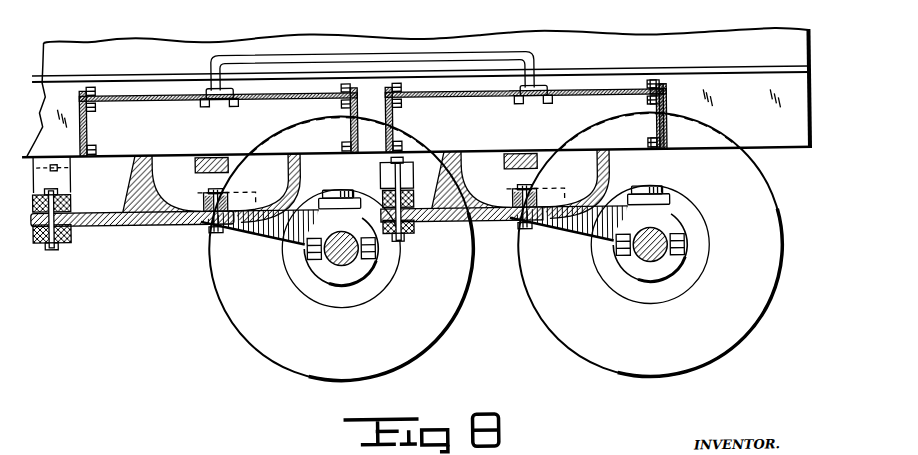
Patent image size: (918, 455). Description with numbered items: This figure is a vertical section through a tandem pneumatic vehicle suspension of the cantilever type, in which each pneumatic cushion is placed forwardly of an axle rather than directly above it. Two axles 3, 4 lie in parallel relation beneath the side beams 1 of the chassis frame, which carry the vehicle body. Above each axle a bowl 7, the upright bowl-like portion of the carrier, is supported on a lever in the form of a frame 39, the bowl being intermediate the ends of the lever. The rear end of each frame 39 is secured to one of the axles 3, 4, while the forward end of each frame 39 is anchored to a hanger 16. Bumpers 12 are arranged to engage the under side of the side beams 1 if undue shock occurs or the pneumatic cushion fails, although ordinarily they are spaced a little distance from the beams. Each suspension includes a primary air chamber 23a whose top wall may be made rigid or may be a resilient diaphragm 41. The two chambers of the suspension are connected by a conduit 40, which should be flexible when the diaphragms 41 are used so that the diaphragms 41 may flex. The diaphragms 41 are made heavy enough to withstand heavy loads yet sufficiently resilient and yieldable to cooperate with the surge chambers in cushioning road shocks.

The side beams of the chassis frame 1 is at (415, 92).
The axle 3 is at (348, 262).
The axle 4 is at (657, 259).
The bowl 7 is at (366, 187).
The bumpers 12 is at (336, 197).
The hanger 16 is at (70, 241).
The primary air chamber 23a is at (373, 118).
The frames 39 is at (262, 243).
The conduit 40 is at (371, 57).
The diaphragm 41 is at (135, 93).